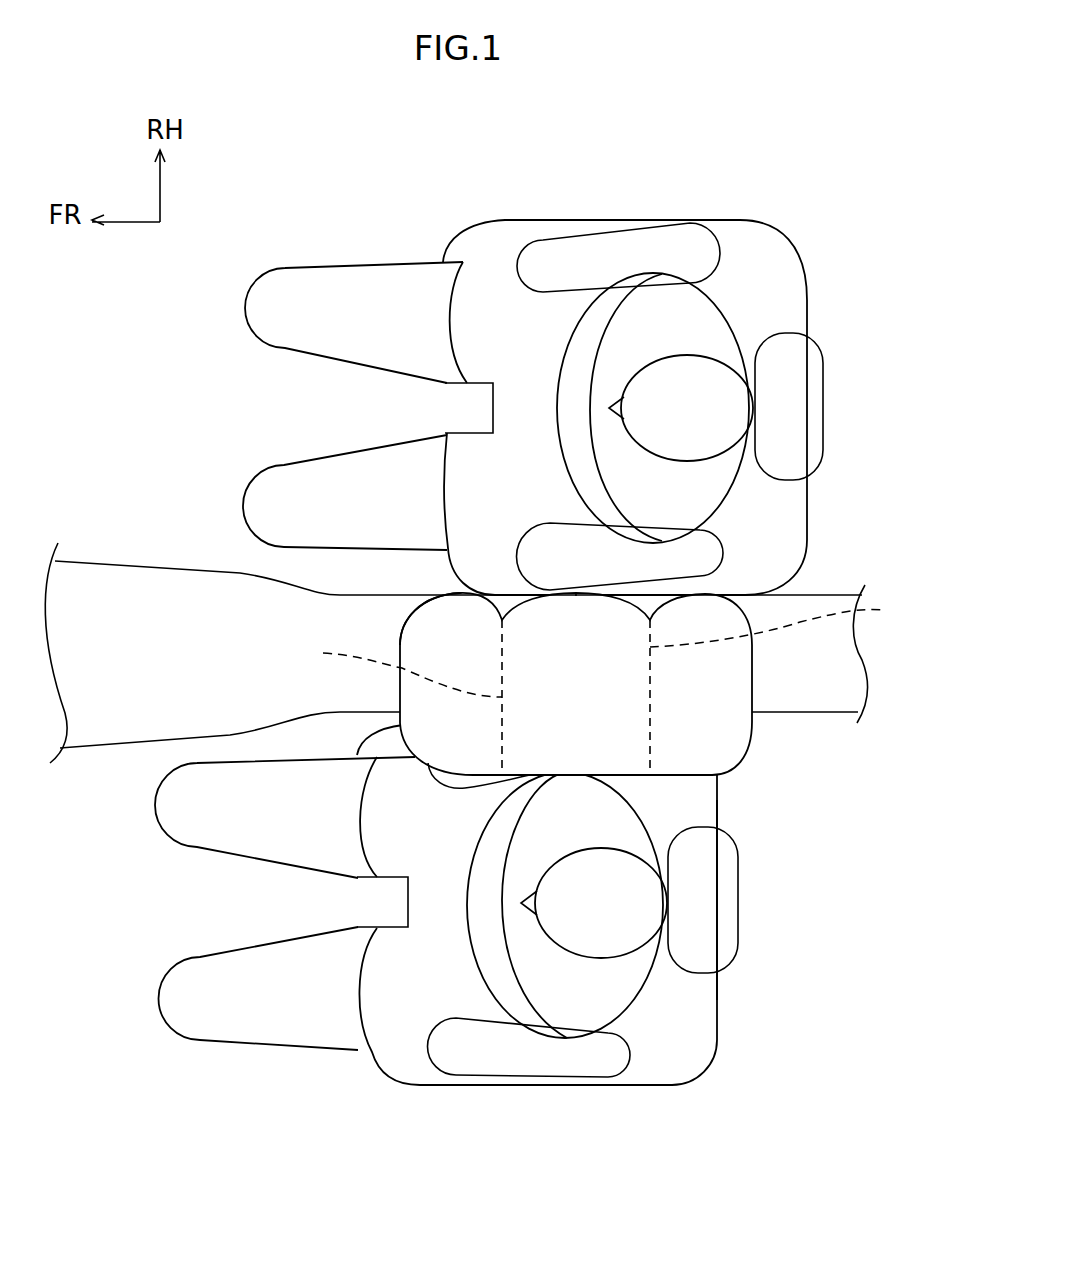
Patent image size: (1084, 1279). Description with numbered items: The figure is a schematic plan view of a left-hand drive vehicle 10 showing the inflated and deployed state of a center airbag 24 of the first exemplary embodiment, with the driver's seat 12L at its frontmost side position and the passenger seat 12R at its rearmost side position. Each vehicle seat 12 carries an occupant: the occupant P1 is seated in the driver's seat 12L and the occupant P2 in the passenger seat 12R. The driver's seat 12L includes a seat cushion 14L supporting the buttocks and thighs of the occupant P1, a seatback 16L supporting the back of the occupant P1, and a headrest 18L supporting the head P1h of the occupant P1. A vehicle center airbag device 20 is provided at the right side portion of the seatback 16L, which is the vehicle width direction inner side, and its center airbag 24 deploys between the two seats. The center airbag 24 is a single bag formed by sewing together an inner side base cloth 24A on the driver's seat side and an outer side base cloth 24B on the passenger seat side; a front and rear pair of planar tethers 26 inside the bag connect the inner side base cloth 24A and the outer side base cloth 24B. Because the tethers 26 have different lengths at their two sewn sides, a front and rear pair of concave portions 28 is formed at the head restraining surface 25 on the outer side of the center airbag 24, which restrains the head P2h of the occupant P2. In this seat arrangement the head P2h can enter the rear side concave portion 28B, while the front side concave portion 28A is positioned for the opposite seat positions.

The vehicle 10 is at (107, 531).
The vehicle seat 12 is at (557, 687).
The passenger seat 12R is at (791, 224).
The driver's seat 12L is at (523, 958).
The seat cushion 14L is at (397, 1085).
The seatback 16L is at (722, 987).
The headrest 18L is at (712, 907).
The vehicle center airbag device 20 is at (773, 664).
The center airbag 24 is at (605, 621).
The inner side base cloth 24A is at (460, 788).
The outer side base cloth 24B is at (450, 597).
The head restraining surface 25 is at (581, 581).
The tether 26 is at (603, 647).
The concave portion 28 is at (605, 582).
The front side concave portion 28A is at (503, 600).
The rear side concave portion 28B is at (652, 615).
The occupant P1 is at (641, 960).
The head of occupant P1 P1h is at (592, 940).
The occupant P2 is at (725, 349).
The head of occupant P2 P2h is at (683, 387).